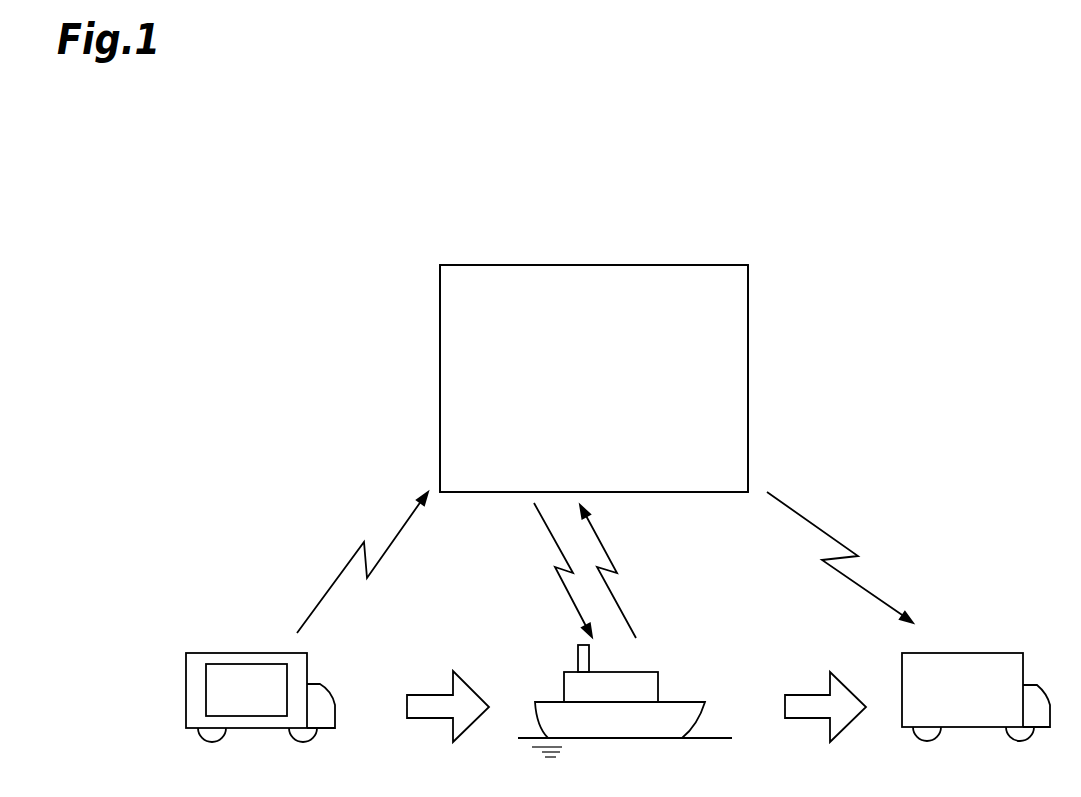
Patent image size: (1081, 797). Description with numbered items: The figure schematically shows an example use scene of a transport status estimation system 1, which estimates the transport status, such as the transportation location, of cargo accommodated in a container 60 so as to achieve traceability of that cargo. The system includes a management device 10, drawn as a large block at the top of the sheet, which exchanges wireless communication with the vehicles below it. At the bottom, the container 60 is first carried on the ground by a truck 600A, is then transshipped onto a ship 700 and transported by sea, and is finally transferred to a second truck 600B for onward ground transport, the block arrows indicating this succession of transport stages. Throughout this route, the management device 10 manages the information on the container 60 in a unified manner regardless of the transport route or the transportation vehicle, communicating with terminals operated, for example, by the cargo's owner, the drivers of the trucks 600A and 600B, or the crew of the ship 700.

The transport status estimation system 1 is at (422, 198).
The management device 10 is at (591, 263).
The container 60 is at (240, 664).
The truck 600A is at (213, 653).
The truck 600B is at (988, 653).
The ship 700 is at (645, 672).